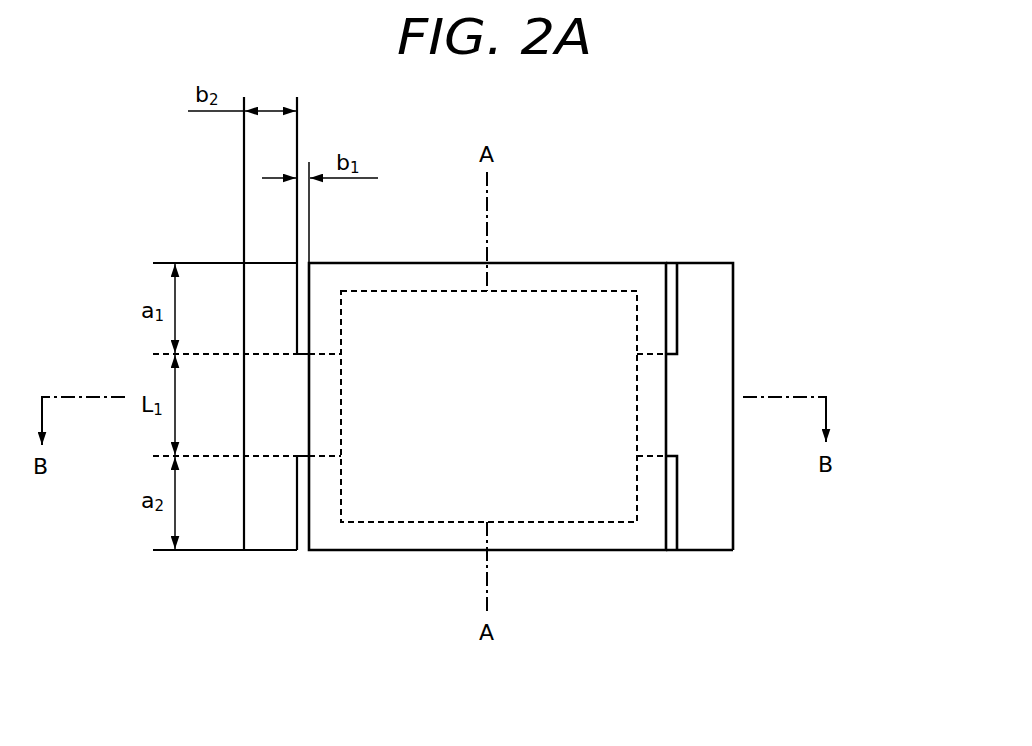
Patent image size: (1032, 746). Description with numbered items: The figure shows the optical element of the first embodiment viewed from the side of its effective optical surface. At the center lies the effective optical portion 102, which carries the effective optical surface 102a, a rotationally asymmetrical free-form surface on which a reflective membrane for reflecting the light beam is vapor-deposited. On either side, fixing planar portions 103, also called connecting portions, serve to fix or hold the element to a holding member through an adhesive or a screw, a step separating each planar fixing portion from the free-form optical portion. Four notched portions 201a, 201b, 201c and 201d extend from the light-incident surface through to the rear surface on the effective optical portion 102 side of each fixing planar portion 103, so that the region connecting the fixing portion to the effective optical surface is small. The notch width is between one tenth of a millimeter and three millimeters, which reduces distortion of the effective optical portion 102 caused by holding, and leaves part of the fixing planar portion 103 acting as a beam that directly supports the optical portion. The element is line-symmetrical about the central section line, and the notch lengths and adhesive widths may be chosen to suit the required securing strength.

The effective optical portion 102 is at (518, 284).
The effective optical surface 102a is at (432, 480).
The fixing planar portion 103 is at (684, 383).
The notched portion 201a is at (308, 298).
The notched portion 201b is at (300, 496).
The notched portion 201c is at (672, 303).
The notched portion 201d is at (670, 492).